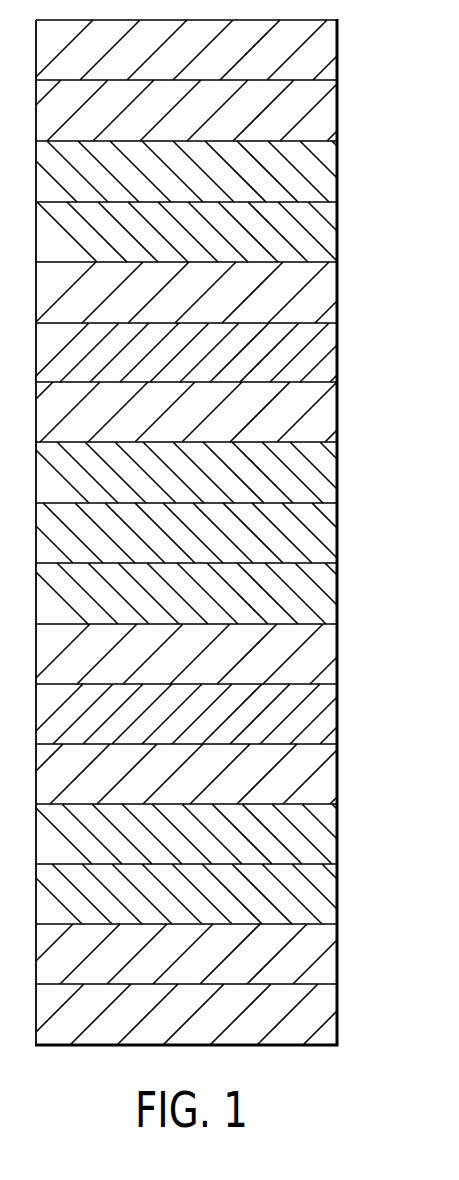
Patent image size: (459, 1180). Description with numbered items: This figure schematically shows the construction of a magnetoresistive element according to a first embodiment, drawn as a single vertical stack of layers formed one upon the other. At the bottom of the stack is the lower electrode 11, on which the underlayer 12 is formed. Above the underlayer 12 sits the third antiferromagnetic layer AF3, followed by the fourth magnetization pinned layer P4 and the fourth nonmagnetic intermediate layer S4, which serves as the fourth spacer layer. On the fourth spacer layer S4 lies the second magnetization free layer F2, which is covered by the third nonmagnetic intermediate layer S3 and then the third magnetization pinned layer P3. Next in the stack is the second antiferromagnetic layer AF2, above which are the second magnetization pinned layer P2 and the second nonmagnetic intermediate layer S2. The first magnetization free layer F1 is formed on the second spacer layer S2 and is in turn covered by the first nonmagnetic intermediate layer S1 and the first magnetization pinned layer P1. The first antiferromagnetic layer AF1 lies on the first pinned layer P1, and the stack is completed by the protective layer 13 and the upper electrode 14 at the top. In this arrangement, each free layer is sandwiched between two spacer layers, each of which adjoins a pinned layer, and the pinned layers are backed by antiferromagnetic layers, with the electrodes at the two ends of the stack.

The lower electrode 11 is at (216, 1014).
The underlayer 12 is at (216, 954).
The third antiferromagnetic layer AF3 is at (222, 894).
The fourth magnetization pinned layer P4 is at (216, 834).
The fourth nonmagnetic intermediate layer S4 is at (216, 774).
The second magnetization free layer F2 is at (216, 714).
The third nonmagnetic intermediate layer S3 is at (216, 654).
The third magnetization pinned layer P3 is at (216, 593).
The second antiferromagnetic layer AF2 is at (222, 533).
The second magnetization pinned layer P2 is at (216, 472).
The second nonmagnetic intermediate layer S2 is at (216, 412).
The first magnetization free layer F1 is at (216, 352).
The first nonmagnetic intermediate layer S1 is at (216, 292).
The first magnetization pinned layer P1 is at (216, 232).
The first antiferromagnetic layer AF1 is at (222, 171).
The protective layer 13 is at (216, 110).
The upper electrode 14 is at (216, 50).